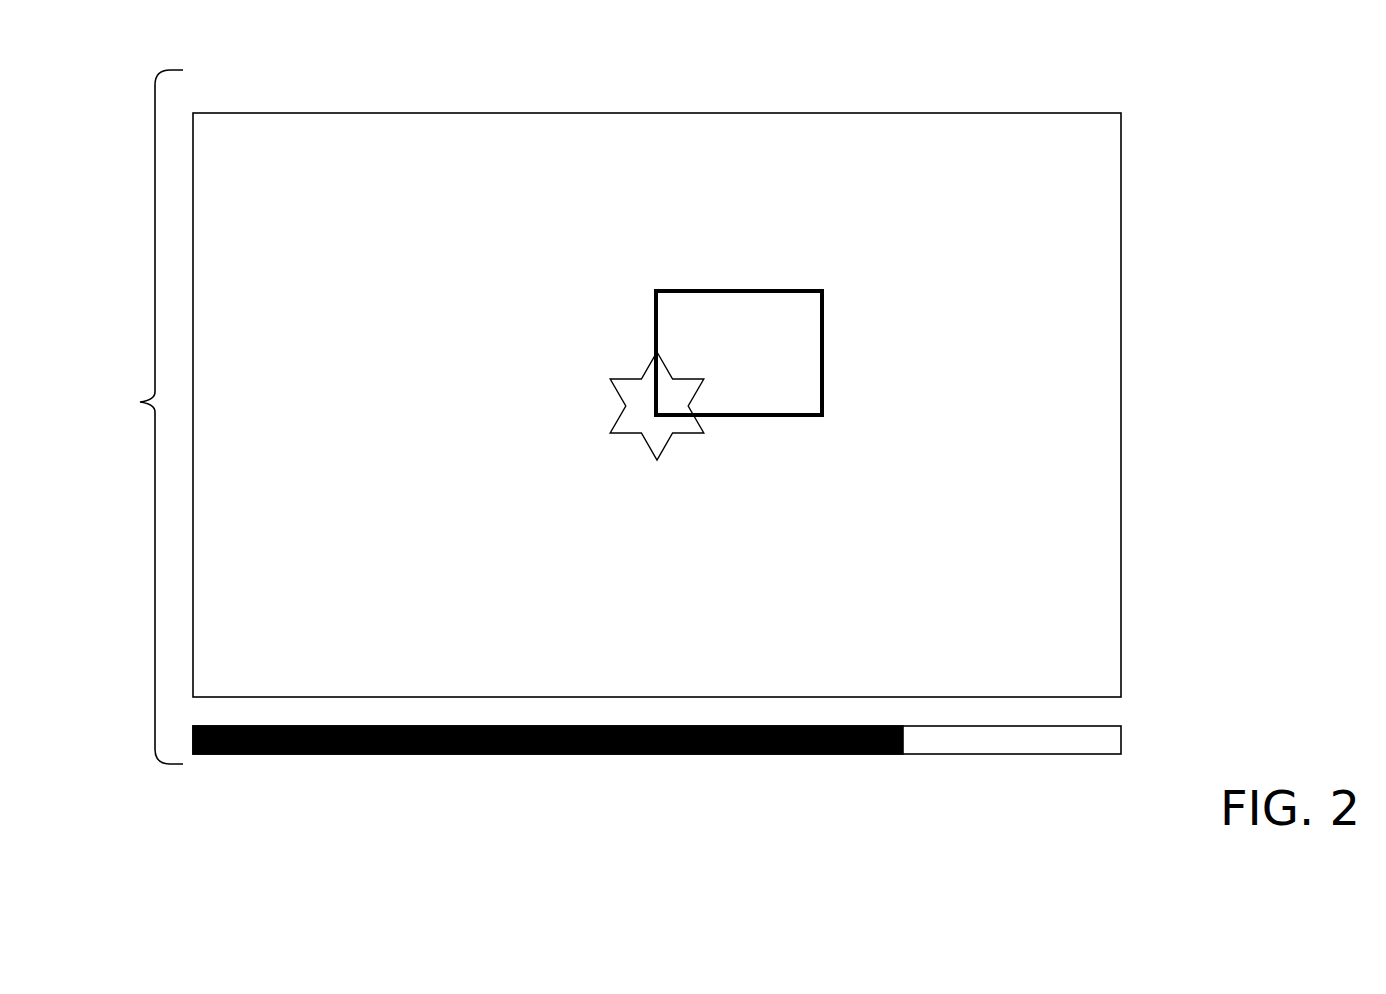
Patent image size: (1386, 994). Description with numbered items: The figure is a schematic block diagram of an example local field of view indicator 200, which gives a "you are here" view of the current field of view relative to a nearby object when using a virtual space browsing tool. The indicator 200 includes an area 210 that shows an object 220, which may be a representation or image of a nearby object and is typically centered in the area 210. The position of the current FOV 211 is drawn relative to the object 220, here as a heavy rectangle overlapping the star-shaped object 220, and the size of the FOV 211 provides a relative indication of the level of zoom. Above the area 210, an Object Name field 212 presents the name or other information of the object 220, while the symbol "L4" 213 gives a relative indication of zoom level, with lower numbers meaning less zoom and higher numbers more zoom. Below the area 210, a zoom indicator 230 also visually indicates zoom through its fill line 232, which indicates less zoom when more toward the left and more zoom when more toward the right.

The local field of view indicator 200 is at (121, 417).
The area 210 is at (1121, 226).
The current FOV 211 is at (822, 290).
The Object Name field 212 is at (303, 70).
The symbol "L4" 213 is at (1121, 75).
The object 220 is at (610, 375).
The zoom indicator 230 is at (1122, 740).
The fill line 232 is at (518, 754).